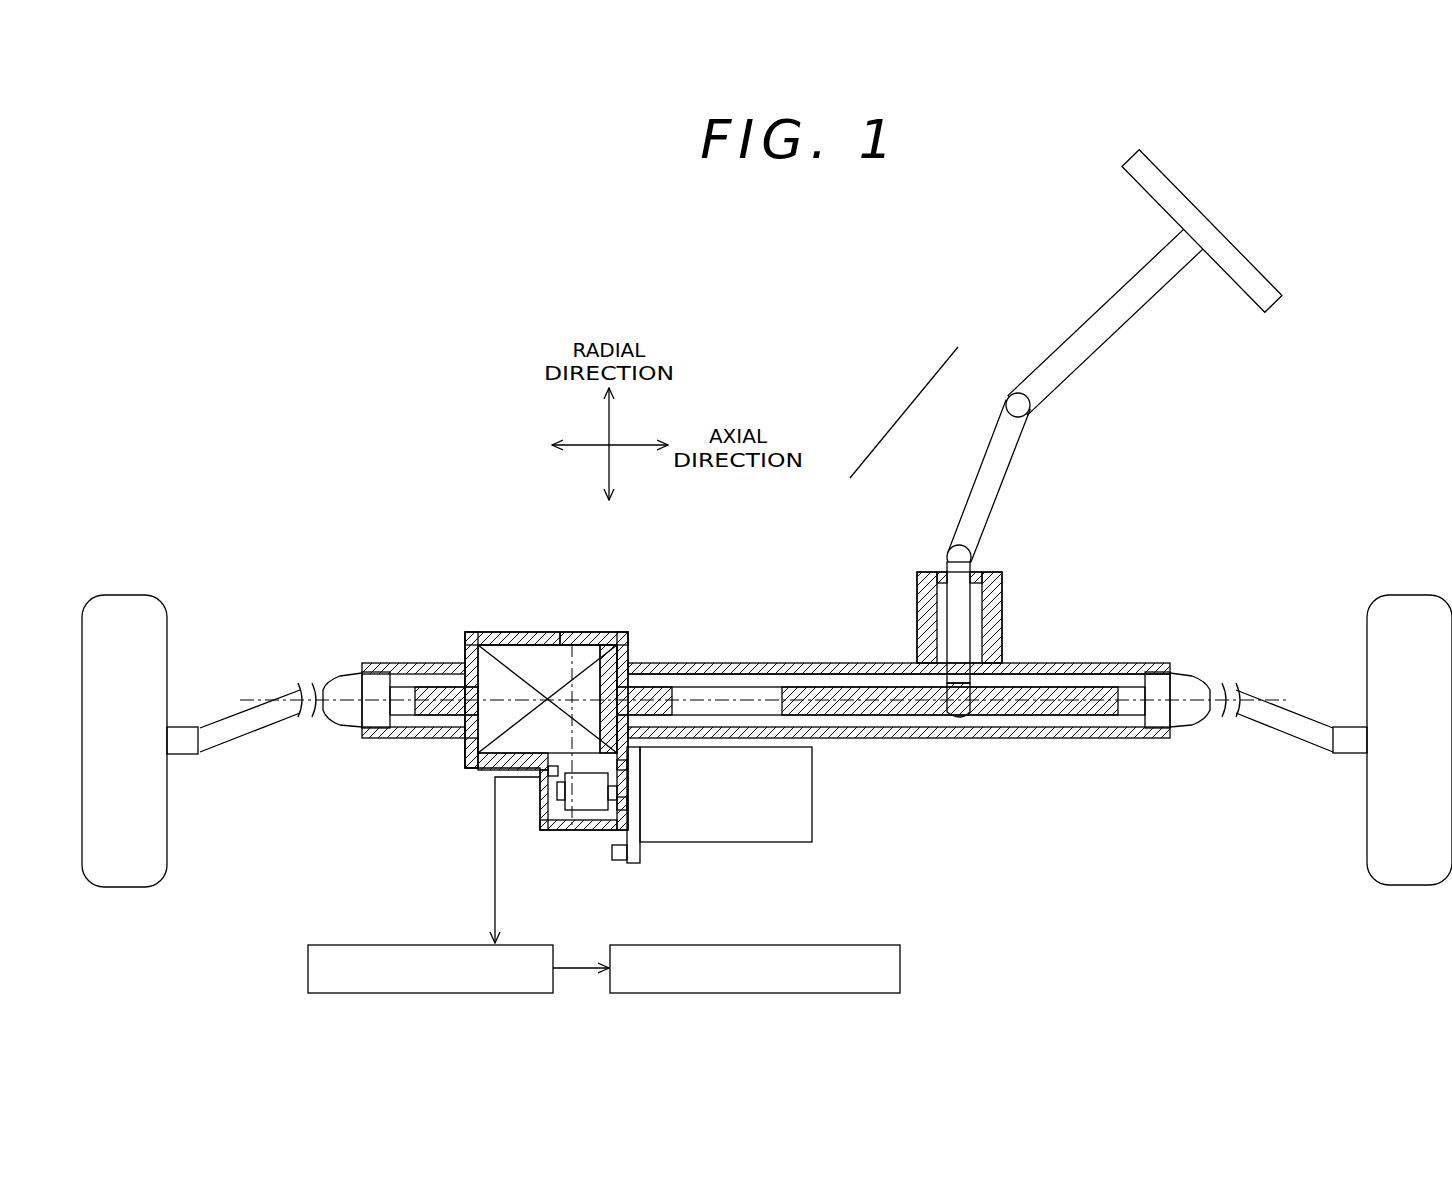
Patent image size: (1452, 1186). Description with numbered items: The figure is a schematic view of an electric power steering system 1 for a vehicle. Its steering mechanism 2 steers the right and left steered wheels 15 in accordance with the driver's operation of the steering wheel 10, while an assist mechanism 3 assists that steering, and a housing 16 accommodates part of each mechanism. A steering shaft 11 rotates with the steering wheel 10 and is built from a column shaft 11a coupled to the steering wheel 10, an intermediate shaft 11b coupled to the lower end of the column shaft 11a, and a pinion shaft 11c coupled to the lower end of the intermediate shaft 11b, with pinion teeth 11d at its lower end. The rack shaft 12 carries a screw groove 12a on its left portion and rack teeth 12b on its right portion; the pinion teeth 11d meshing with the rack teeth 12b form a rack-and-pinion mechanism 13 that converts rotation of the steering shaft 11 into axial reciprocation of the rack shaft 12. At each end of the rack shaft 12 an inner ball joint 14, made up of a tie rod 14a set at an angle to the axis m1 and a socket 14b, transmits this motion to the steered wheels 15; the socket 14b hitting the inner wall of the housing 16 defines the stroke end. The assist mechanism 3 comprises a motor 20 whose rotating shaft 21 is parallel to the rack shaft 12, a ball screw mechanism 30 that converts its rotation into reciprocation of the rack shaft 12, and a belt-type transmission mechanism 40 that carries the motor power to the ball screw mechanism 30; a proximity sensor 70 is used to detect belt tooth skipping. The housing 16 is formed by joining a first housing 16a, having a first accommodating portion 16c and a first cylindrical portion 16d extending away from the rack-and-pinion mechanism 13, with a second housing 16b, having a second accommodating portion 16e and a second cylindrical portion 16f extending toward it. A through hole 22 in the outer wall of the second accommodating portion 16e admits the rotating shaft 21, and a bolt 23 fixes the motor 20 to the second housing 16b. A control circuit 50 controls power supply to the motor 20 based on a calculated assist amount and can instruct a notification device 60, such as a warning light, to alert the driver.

The electric power steering system 1 is at (777, 298).
The steering mechanism 2 is at (1226, 387).
The assist mechanism 3 is at (632, 633).
The steering wheel 10 is at (1178, 178).
The steering shaft 11 is at (904, 412).
The column shaft 11a is at (1031, 375).
The intermediate shaft 11b is at (981, 465).
The pinion shaft 11c is at (943, 572).
The pinion teeth 11d is at (959, 724).
The rack shaft 12 is at (836, 717).
The screw groove 12a is at (432, 688).
The rack teeth 12b is at (1032, 706).
The rack-and-pinion mechanism 13 is at (935, 792).
The inner ball joint 14 is at (232, 795).
The tie rod 14a is at (258, 727).
The socket 14b is at (340, 720).
The steered wheel 15 is at (128, 595).
The housing 16 is at (505, 550).
The first housing 16a is at (536, 632).
The second housing 16b is at (583, 632).
The first accommodating portion 16c is at (520, 648).
The first cylindrical portion 16d is at (467, 663).
The second accommodating portion 16e is at (620, 640).
The second cylindrical portion 16f is at (715, 678).
The motor 20 is at (728, 845).
The rotating shaft 21 is at (622, 805).
The through hole 22 is at (626, 765).
The bolt 23 is at (609, 848).
The ball screw mechanism 30 is at (466, 746).
The belt-type transmission mechanism 40 is at (611, 672).
The control circuit 50 is at (332, 944).
The notification device 60 is at (653, 944).
The proximity sensor 70 is at (553, 768).
The axis of the rack shaft m1 is at (787, 700).